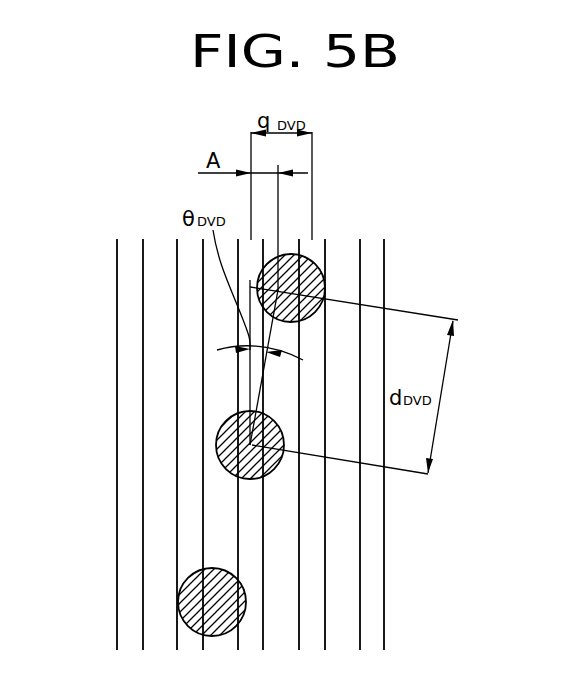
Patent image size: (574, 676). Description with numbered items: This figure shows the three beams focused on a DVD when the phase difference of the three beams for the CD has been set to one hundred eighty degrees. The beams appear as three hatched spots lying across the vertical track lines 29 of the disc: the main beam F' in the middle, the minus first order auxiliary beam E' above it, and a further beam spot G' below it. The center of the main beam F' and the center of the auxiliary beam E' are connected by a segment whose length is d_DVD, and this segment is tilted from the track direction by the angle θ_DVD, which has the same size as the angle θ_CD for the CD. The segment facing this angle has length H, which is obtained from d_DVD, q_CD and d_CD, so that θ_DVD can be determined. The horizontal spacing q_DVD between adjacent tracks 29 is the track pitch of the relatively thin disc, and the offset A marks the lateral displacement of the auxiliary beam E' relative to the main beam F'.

The tracks 29 is at (163, 478).
The -1st order auxiliary beam E' is at (346, 286).
The main beam F' is at (162, 421).
The third beam spot G' is at (143, 601).
The length of the segment facing the angle θ_DVD H is at (258, 262).